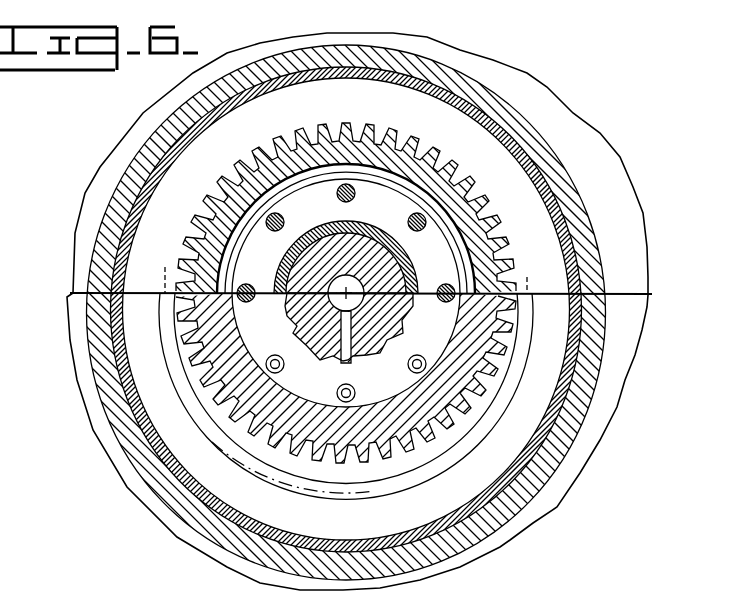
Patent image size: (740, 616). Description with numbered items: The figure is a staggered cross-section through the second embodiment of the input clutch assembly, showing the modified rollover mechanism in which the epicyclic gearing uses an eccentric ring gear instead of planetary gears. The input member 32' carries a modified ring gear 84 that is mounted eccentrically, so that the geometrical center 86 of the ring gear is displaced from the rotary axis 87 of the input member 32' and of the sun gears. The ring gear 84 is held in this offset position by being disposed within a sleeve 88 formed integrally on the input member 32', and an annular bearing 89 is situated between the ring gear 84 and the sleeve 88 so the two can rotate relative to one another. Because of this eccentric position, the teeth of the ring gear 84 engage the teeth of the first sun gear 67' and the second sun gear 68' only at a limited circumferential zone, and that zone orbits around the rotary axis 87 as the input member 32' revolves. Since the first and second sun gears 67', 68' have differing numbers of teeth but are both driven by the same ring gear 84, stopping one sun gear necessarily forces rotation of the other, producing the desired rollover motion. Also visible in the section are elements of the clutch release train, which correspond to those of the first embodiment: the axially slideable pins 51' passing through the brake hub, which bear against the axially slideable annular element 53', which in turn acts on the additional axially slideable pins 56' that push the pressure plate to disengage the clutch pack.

The input member 32' is at (384, 311).
The ring gear 84 is at (560, 233).
The sleeve 88 is at (571, 160).
The annular bearing 89 is at (487, 123).
The second sun gear 68' is at (337, 207).
The first sun gear 67' is at (320, 379).
The axially slideable annular element 53' is at (346, 293).
The axially slideable pins 51' is at (346, 243).
The axially slideable pins 56' is at (346, 378).
The rotary axis 87 is at (343, 293).
The geometrical center 86 is at (350, 311).